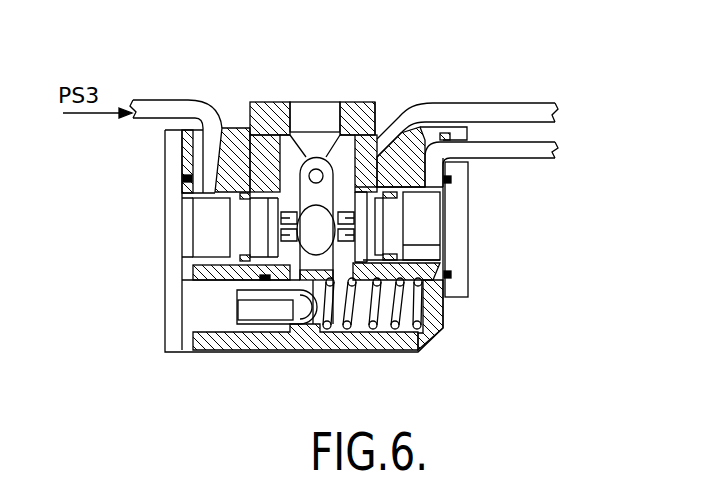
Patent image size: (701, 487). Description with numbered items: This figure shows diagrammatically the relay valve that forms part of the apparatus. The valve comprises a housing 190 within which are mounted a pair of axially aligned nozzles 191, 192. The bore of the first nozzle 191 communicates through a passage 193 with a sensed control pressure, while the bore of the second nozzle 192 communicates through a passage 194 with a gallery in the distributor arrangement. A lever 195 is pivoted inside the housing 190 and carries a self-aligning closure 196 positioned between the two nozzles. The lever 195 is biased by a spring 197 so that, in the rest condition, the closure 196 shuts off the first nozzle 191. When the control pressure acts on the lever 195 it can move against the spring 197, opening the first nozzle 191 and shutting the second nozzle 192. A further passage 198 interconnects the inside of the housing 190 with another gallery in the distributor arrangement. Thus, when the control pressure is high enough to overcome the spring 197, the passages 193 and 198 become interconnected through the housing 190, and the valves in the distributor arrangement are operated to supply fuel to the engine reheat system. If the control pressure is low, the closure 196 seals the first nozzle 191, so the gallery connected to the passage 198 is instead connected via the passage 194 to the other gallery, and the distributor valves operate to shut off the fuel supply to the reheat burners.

The housing 190 is at (433, 308).
The nozzle 191 is at (248, 130).
The nozzle 192 is at (368, 220).
The passage 193 is at (150, 110).
The passage 194 is at (520, 148).
The lever 195 is at (340, 250).
The self-aligning closure 196 is at (317, 236).
The spring 197 is at (430, 340).
The passage 198 is at (515, 113).